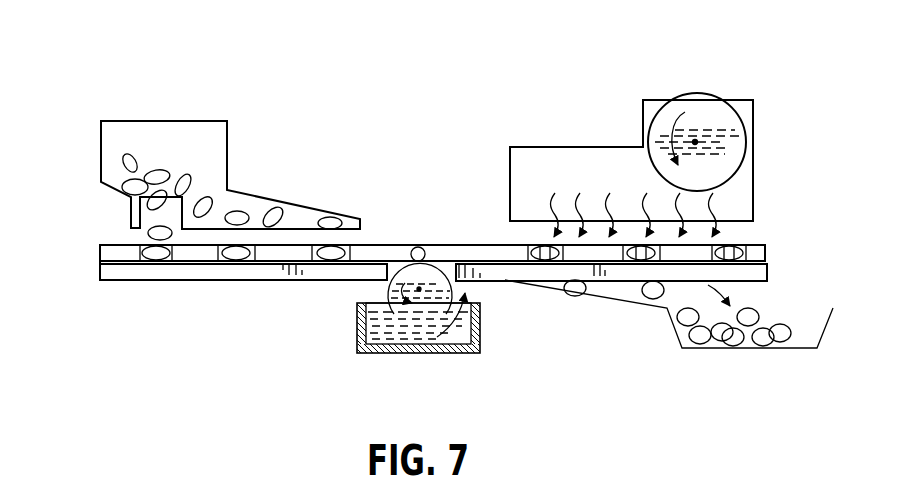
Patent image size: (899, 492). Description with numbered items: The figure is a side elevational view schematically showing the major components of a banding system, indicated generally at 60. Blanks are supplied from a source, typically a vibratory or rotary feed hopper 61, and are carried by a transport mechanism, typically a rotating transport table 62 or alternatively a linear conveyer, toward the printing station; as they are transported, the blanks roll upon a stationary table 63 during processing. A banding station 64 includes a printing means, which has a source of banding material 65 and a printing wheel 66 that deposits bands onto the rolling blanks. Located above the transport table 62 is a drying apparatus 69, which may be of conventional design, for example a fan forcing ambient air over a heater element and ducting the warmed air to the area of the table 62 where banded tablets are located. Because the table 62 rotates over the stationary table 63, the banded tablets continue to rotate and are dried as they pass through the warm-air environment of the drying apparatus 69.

The drying oven / heater 60 is at (785, 126).
The capsule hopper 61 is at (100, 138).
The belt pocket 62 is at (398, 243).
The conveyor belt 63 is at (240, 282).
The discharge chute 64 is at (517, 318).
The coating solution tank 65 is at (385, 337).
The applicator roller 66 is at (393, 294).
The rotating drum 69 is at (660, 100).